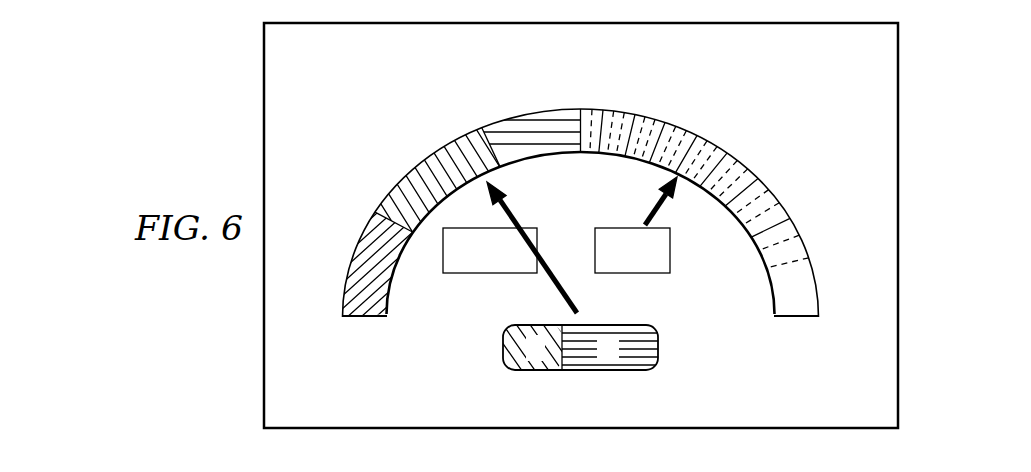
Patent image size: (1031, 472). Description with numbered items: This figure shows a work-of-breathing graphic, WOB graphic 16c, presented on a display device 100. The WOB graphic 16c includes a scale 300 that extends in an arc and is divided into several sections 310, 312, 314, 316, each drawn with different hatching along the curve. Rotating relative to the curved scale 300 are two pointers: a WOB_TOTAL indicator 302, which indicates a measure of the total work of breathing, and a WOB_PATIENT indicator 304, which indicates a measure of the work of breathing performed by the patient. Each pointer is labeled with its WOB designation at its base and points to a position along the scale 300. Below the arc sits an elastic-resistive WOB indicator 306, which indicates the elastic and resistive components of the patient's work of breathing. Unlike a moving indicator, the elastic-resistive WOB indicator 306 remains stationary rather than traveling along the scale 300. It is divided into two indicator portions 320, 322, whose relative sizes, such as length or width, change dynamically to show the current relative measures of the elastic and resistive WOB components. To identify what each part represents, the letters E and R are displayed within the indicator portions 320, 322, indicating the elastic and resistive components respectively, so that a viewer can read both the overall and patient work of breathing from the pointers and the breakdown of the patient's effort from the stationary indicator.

The display device 100 is at (899, 158).
The WOB graphic 16c is at (810, 94).
The scale 300 is at (545, 200).
The WOB_TOTAL indicator 302 is at (670, 248).
The WOB_PATIENT indicator 304 is at (552, 290).
The elastic-resistive WOB indicator 306 is at (595, 347).
The section of scale 310 is at (355, 258).
The section of scale 312 is at (425, 167).
The section of scale 314 is at (538, 116).
The section of scale 316 is at (780, 210).
The indicator portion 320 is at (517, 372).
The indicator portion 322 is at (632, 365).